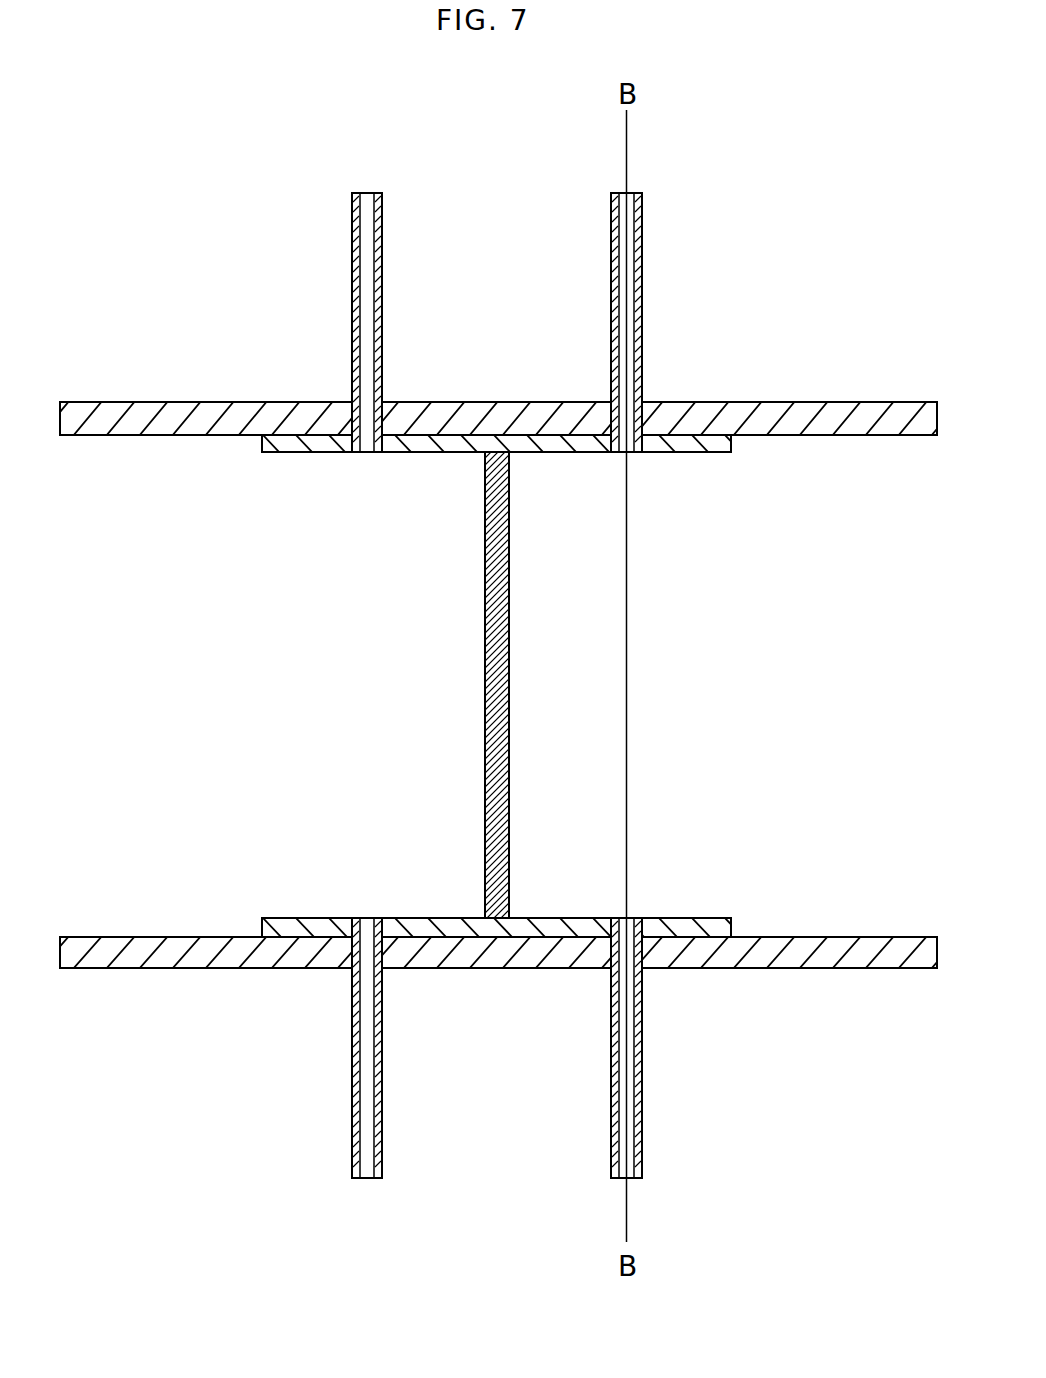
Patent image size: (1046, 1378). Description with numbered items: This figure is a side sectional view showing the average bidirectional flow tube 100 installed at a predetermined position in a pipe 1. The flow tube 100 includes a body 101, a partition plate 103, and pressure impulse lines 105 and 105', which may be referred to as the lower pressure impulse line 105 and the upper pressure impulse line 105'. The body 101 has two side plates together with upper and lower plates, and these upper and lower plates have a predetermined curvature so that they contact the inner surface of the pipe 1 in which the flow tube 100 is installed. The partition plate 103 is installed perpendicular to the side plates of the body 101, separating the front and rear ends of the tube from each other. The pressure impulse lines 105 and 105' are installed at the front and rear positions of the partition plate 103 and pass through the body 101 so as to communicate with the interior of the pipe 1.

The pipe 1 is at (847, 968).
The body 101 is at (292, 453).
The partition plate 103 is at (485, 594).
The lower pressure impulse line 105 is at (424, 1048).
The upper pressure impulse line 105' is at (497, 278).
The average bidirectional flow tube 100 is at (721, 735).